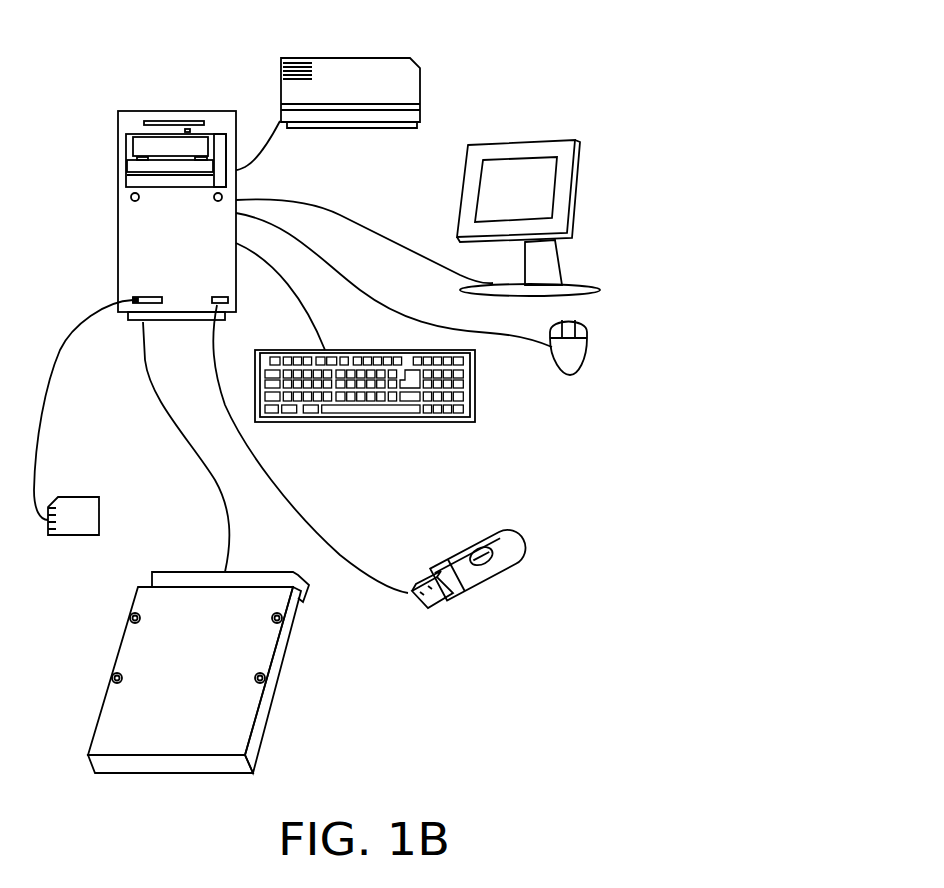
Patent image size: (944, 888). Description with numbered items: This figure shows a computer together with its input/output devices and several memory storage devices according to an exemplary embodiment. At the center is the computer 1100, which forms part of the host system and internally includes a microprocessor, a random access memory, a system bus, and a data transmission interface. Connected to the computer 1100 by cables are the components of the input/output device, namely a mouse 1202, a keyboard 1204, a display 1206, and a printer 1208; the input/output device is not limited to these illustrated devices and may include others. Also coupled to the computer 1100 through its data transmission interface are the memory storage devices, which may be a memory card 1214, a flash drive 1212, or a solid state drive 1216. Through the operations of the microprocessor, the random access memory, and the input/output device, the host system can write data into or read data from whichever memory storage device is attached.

The computer 1100 is at (178, 110).
The mouse 1202 is at (588, 350).
The keyboard 1204 is at (475, 397).
The display 1206 is at (530, 140).
The printer 1208 is at (346, 58).
The flash drive 1212 is at (465, 553).
The memory card 1214 is at (100, 507).
The solid state drive (SSD) 1216 is at (252, 560).